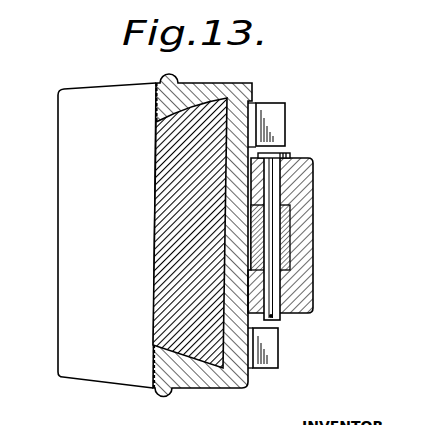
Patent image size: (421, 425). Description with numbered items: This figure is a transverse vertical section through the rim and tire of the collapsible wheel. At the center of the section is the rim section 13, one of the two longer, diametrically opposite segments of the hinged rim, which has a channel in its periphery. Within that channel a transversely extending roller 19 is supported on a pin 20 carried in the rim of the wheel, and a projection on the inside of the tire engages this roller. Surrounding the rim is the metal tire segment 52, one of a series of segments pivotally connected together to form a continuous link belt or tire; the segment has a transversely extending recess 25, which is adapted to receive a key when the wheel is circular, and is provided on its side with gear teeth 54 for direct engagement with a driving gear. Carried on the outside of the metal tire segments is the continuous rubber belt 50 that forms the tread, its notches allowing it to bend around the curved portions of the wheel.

The rim section 13 is at (313, 182).
The roller 19 is at (290, 215).
The pin 20 is at (278, 237).
The recess 25 is at (268, 260).
The rubber belt 50 is at (152, 283).
The tire segment 52 is at (216, 386).
The gear teeth 54 is at (275, 120).